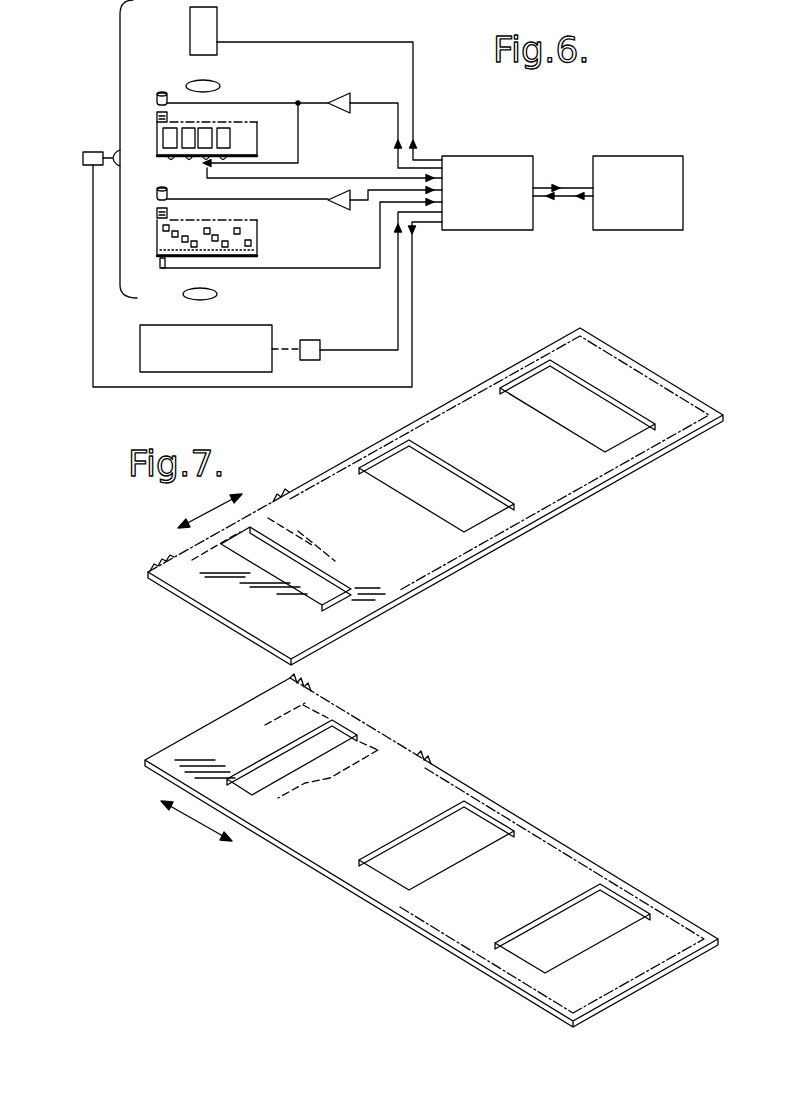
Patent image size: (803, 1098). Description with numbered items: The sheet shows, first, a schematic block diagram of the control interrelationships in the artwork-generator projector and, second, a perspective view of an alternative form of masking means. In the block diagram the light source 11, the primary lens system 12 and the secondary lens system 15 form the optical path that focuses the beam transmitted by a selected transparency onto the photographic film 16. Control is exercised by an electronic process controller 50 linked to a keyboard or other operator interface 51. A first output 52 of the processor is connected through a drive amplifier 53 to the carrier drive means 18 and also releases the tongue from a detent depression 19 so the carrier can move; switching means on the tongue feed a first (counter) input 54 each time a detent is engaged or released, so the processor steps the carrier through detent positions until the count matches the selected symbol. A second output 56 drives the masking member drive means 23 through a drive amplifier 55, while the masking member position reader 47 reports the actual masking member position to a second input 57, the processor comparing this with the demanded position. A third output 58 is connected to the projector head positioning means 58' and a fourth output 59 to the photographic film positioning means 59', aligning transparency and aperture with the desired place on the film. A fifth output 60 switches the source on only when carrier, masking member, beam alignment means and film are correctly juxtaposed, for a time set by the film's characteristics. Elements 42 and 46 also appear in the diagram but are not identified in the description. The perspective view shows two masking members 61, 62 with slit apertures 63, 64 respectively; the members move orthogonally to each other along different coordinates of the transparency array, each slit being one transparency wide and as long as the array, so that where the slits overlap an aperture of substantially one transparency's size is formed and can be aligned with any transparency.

In FIG. 6, the light source 11 is at (210, 25).
In FIG. 6, the primary lens system 12 is at (220, 86).
In FIG. 6, the secondary lens system 15 is at (217, 297).
In FIG. 6, the photographic film 16 is at (263, 337).
In FIG. 6, the carrier drive means 18 is at (157, 103).
In FIG. 6, the detent depression 19 is at (188, 154).
In FIG. 6, the masking member drive means 23 is at (157, 197).
In FIG. 6, the photodetector array 42 is at (157, 238).
In FIG. 6, the detector output contact strip 46 is at (247, 262).
In FIG. 6, the masking member position reader 47 is at (160, 268).
In FIG. 6, the electronic process controller 50 is at (525, 163).
In FIG. 6, the keyboard or other operator interface 51 is at (666, 132).
In FIG. 6, the first output 52 is at (433, 164).
In FIG. 6, the drive amplifier 53 is at (341, 94).
In FIG. 6, the first (counter) input 54 is at (442, 172).
In FIG. 6, the drive amplifier 55 is at (334, 206).
In FIG. 6, the second output 56 is at (442, 196).
In FIG. 6, the second input 57 is at (441, 213).
In FIG. 6, the third output 58 is at (275, 276).
In FIG. 6, the projector head positioning means 58' is at (82, 122).
In FIG. 6, the fourth output 59 is at (396, 281).
In FIG. 6, the photographic film positioning means 59' is at (343, 334).
In FIG. 6, the fifth output 60 is at (416, 157).
In FIG. 7, the masking member 61 is at (290, 823).
In FIG. 7, the masking member 62 is at (330, 641).
In FIG. 7, the slit aperture 63 is at (340, 733).
In FIG. 7, the slit aperture 64 is at (350, 584).